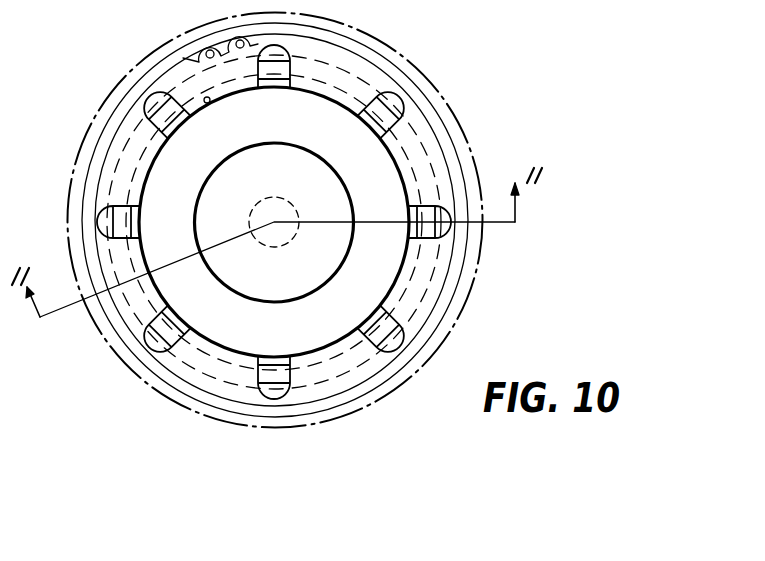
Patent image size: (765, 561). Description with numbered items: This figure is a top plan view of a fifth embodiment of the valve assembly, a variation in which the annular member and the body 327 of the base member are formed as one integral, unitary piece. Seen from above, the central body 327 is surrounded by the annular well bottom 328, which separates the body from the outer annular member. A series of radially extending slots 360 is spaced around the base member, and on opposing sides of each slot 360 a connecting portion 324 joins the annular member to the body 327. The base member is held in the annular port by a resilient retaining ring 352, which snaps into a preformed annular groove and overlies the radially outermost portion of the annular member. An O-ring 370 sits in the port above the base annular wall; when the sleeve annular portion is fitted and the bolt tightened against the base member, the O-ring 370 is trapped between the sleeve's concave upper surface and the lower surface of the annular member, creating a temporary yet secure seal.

The resilient retaining ring 352 is at (362, 50).
The O-ring 370 is at (117, 215).
The connecting portion 324 is at (205, 103).
The body 327 is at (297, 283).
The annular well bottom 328 is at (276, 333).
The radially extending slots 360 is at (383, 343).